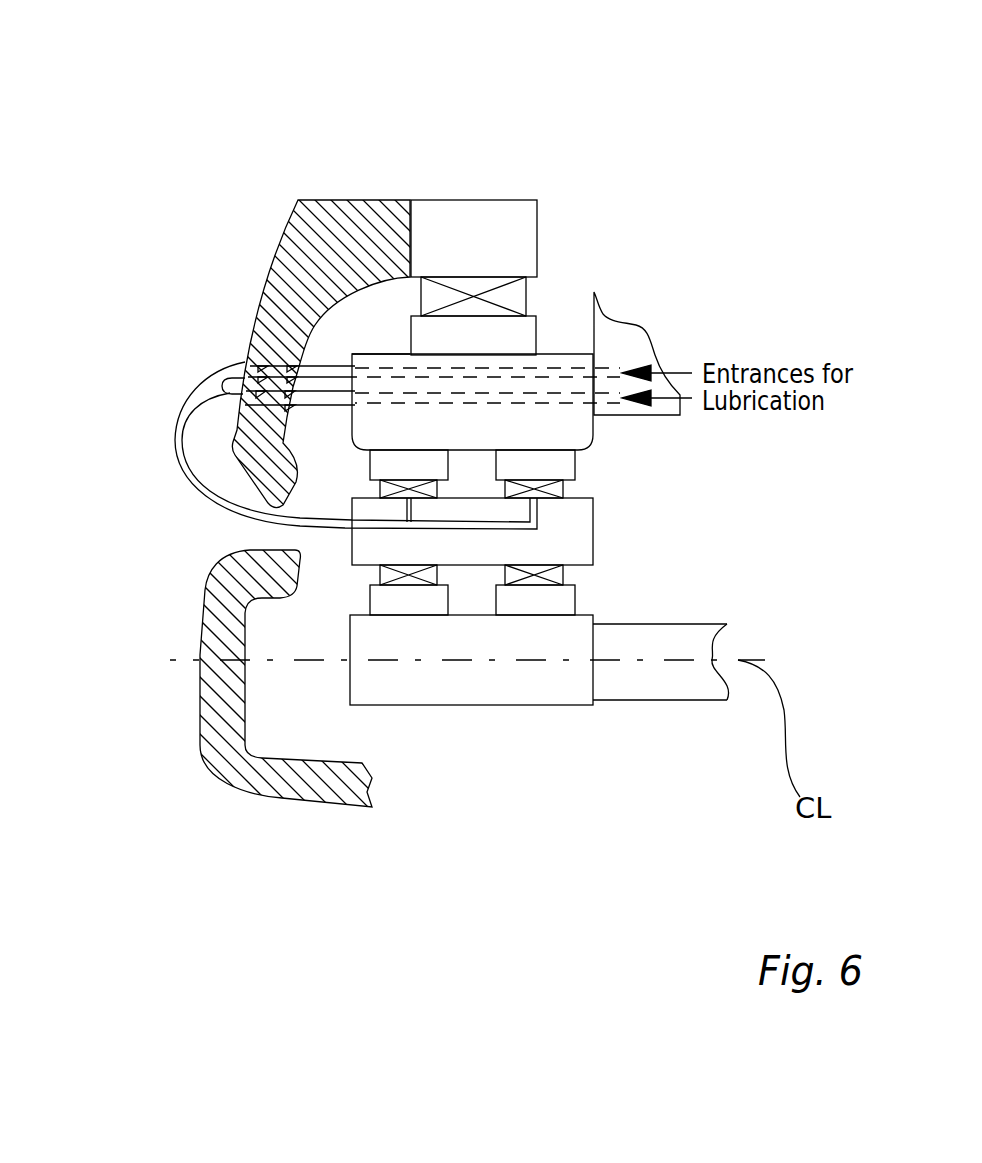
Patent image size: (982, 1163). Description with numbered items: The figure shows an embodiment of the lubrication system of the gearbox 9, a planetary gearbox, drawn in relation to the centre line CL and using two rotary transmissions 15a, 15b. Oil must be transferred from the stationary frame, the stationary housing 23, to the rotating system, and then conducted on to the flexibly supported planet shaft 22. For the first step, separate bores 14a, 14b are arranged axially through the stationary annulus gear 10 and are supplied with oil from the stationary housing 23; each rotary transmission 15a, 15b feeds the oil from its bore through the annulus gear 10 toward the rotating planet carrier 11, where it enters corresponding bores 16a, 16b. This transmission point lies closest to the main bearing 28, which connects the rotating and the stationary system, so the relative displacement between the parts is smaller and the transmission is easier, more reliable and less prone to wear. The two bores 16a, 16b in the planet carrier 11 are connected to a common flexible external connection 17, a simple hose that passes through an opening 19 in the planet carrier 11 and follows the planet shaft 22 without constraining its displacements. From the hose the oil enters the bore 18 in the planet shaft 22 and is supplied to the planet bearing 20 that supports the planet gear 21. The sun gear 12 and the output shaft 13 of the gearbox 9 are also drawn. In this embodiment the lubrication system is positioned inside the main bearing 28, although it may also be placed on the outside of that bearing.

The gearbox 9 is at (554, 95).
The annulus gear 10 is at (568, 357).
The planet carrier 11 is at (336, 199).
The sun gear 12 is at (545, 690).
The output shaft 13 is at (633, 675).
The bore in the annulus gear 14a is at (420, 378).
The bore in the annulus gear 14b is at (380, 378).
The rotary transmission 15a is at (330, 367).
The rotary transmission 15b is at (305, 587).
The bore in the planet carrier 16a is at (262, 357).
The bore in the planet carrier 16b is at (242, 411).
The flexible external connection 17 is at (184, 408).
The bore in the planet shaft 18 is at (407, 522).
The opening in the planet carrier 19 is at (262, 541).
The planet bearing 20 is at (562, 488).
The planet gear 21 is at (553, 462).
The planet shaft 22 is at (572, 545).
The stationary housing 23 is at (632, 333).
The main bearing 28 is at (442, 290).